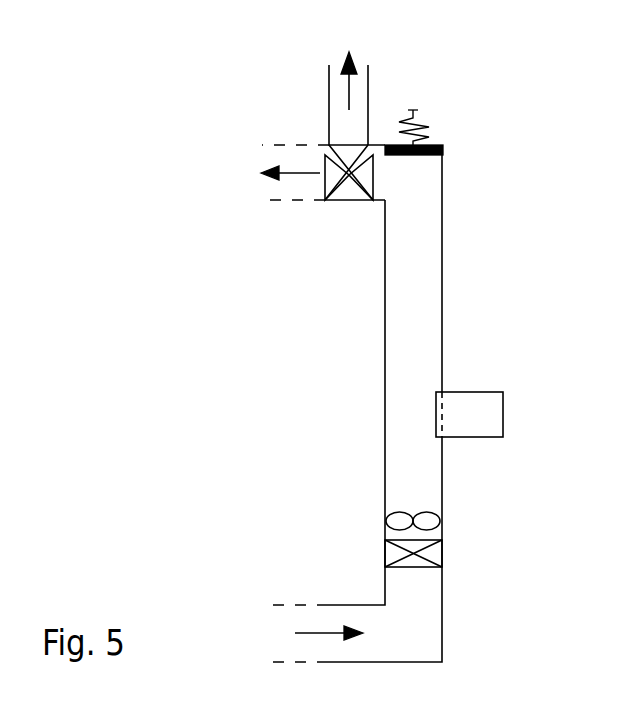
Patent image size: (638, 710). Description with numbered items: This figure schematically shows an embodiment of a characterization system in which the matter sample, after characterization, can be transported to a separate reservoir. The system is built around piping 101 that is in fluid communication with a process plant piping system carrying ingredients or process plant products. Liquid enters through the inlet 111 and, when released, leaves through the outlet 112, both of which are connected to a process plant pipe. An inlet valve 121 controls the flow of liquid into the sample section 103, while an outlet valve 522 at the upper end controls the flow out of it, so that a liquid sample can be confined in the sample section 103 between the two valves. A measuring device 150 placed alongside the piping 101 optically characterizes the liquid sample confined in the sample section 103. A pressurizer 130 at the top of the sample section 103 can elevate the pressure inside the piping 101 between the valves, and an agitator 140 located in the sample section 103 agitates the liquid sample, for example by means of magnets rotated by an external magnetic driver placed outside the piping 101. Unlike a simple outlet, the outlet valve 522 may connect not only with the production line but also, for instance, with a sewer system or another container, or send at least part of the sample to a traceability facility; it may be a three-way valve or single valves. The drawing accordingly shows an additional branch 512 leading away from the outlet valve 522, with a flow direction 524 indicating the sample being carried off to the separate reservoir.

The piping 101 is at (442, 302).
The sample section 103 is at (405, 320).
The inlet 111 is at (305, 634).
The outlet 112 is at (267, 174).
The inlet valve 121 is at (392, 560).
The pressurizer 130 is at (443, 150).
The agitator 140 is at (399, 521).
The measuring device 150 is at (503, 423).
The outlet pipe 512 is at (368, 82).
The outlet valve 522 is at (330, 177).
The outlet flow direction 524 is at (349, 68).